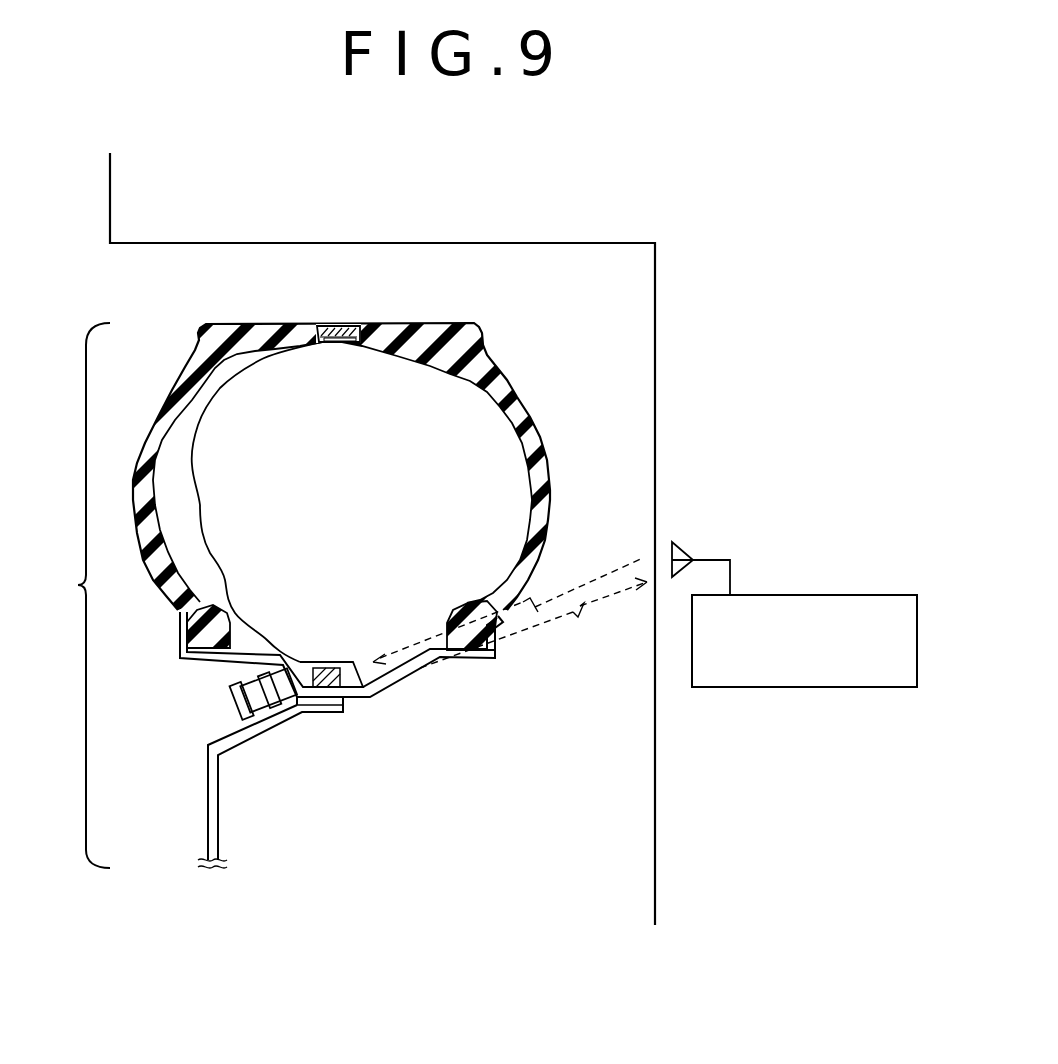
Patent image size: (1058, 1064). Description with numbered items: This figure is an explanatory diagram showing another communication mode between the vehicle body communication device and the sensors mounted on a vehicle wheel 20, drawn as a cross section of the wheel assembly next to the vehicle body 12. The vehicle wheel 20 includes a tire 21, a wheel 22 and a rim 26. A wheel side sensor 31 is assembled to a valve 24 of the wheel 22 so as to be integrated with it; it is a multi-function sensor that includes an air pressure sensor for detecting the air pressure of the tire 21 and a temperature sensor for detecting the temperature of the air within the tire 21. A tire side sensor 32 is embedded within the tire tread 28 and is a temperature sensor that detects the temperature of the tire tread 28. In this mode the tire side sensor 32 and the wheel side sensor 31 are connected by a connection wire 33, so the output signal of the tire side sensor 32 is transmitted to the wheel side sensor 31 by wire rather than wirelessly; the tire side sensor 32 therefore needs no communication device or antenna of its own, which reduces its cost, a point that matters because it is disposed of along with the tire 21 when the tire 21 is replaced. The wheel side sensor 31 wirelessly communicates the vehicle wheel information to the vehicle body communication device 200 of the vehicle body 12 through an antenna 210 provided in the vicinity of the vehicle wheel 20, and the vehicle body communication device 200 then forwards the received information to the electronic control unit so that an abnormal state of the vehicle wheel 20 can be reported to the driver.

The vehicle body 12 is at (655, 838).
The vehicle wheel 20 is at (78, 585).
The tire 21 is at (517, 410).
The wheel 22 is at (210, 798).
The valve 24 is at (222, 715).
The rim 26 is at (430, 648).
The tire tread 28 is at (333, 326).
The wheel side sensor 31 is at (333, 663).
The tire side sensor 32 is at (347, 337).
The connection wire 33 is at (192, 435).
The vehicle body communication device 200 is at (760, 688).
The antenna 210 is at (687, 546).